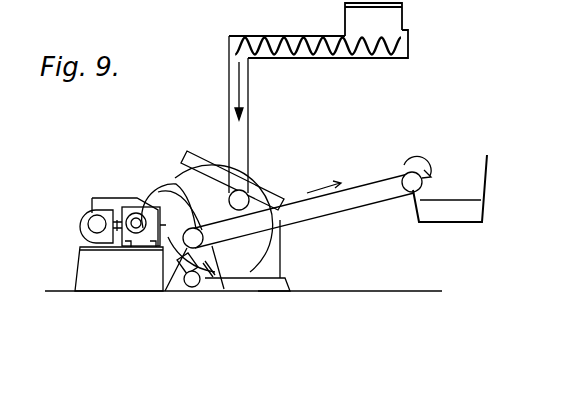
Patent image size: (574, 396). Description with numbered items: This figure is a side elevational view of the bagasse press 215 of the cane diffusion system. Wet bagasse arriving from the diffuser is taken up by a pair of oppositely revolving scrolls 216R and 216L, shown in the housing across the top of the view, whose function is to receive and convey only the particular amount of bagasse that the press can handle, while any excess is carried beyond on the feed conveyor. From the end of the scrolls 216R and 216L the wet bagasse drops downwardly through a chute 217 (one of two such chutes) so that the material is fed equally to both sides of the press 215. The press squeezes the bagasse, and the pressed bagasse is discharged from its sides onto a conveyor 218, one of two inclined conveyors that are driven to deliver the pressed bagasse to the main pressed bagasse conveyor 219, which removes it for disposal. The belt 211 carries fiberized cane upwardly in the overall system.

The belt 211 is at (398, 15).
The bagasse press 215 is at (270, 187).
The right scroll 216R is at (313, 58).
The left scroll 216L is at (285, 58).
The chute 217 is at (229, 112).
The conveyor 218 is at (334, 212).
The main pressed bagasse conveyor 219 is at (445, 198).